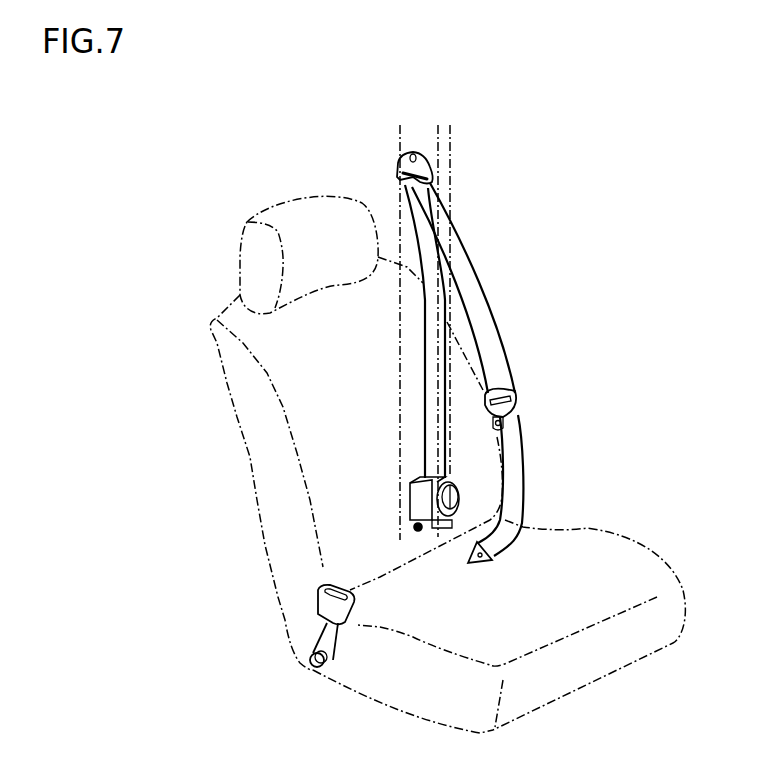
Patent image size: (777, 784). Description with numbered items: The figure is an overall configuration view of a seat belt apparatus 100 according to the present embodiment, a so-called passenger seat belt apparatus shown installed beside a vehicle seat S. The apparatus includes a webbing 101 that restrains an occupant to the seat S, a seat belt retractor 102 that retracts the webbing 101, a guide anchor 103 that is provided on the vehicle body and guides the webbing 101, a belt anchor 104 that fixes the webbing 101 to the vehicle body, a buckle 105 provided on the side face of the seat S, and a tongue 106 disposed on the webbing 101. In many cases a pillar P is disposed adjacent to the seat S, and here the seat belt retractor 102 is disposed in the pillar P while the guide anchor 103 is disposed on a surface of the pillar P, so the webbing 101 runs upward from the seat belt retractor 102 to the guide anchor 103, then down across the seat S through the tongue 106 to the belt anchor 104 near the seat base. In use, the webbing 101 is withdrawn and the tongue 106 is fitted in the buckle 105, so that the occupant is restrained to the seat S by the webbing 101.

The seat S is at (188, 284).
The pillar P is at (446, 145).
The seat belt apparatus 100 is at (526, 338).
The webbing 101 is at (465, 290).
The seat belt retractor 102 is at (420, 497).
The guide anchor 103 is at (398, 161).
The belt anchor 104 is at (483, 566).
The buckle 105 is at (322, 603).
The tongue 106 is at (520, 404).